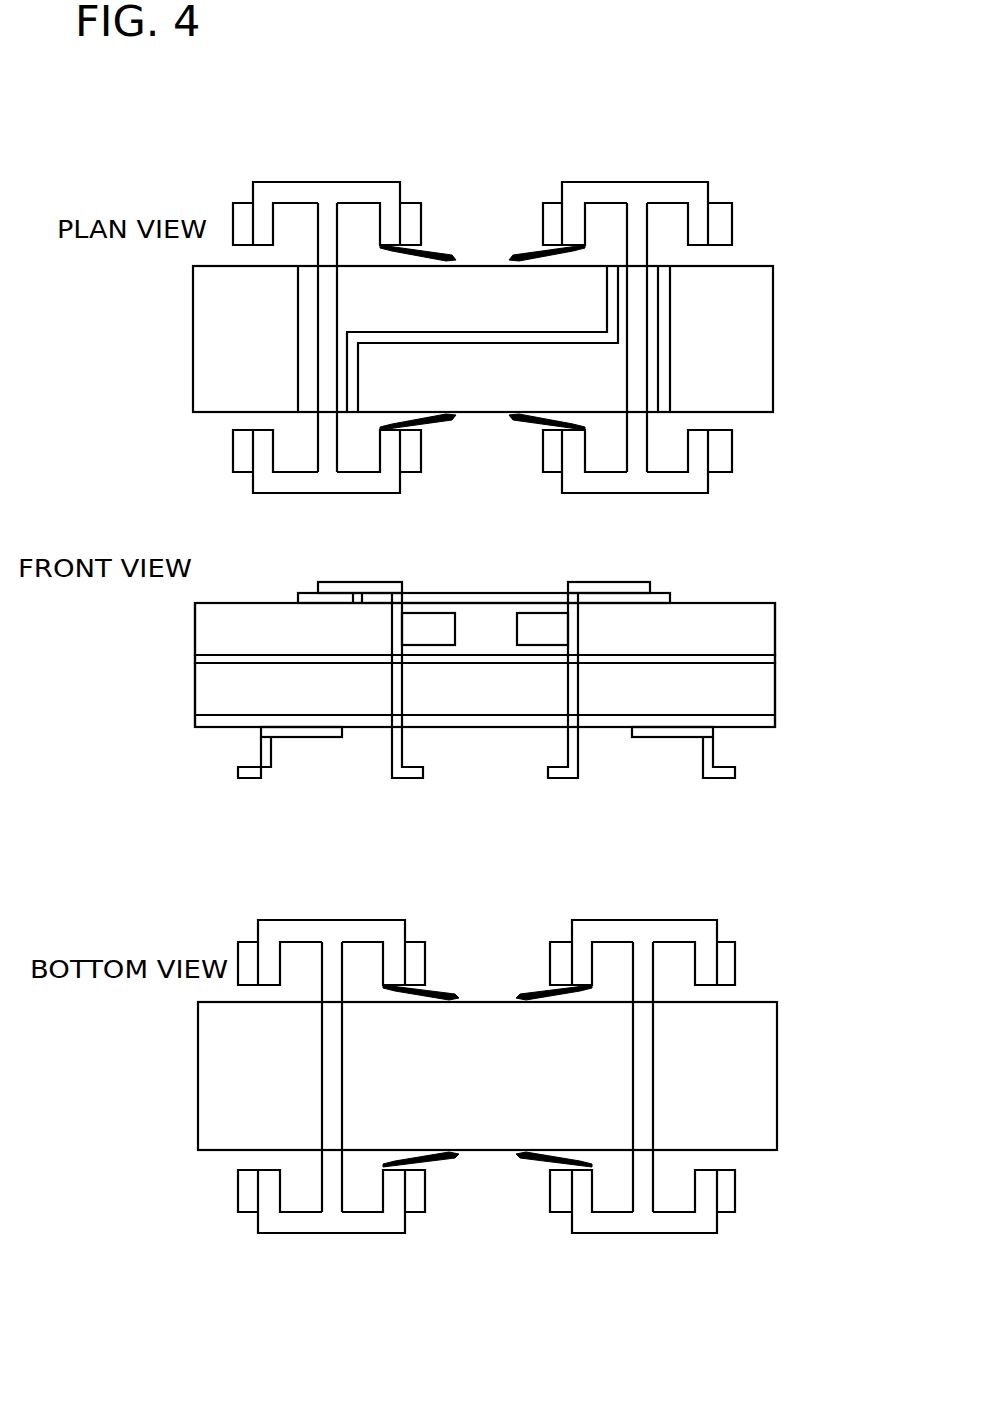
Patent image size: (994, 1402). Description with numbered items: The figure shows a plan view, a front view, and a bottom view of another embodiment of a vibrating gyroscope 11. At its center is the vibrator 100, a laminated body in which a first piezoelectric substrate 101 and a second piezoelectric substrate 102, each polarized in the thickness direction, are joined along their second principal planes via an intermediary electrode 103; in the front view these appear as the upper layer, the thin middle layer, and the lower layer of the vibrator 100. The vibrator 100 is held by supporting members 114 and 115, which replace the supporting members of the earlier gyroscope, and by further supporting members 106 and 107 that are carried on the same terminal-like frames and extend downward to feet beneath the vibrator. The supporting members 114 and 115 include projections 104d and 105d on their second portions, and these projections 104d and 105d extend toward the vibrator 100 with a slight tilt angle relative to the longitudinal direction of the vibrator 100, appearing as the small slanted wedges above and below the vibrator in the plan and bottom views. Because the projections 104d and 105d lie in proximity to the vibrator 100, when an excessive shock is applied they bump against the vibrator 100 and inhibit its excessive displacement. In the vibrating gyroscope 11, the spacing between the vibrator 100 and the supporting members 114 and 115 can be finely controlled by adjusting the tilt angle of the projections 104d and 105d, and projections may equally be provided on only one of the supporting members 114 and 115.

The vibrating gyroscope 11 is at (198, 147).
The vibrator 100 is at (742, 275).
The first piezoelectric substrate 101 is at (195, 628).
The second piezoelectric substrate 102 is at (195, 700).
The intermediary electrode 103 is at (195, 663).
The projection 104d is at (453, 260).
The projection 105d is at (515, 260).
The terminal 106 is at (291, 195).
The terminal 107 is at (689, 195).
The supporting member 114 is at (355, 195).
The supporting member 115 is at (610, 195).